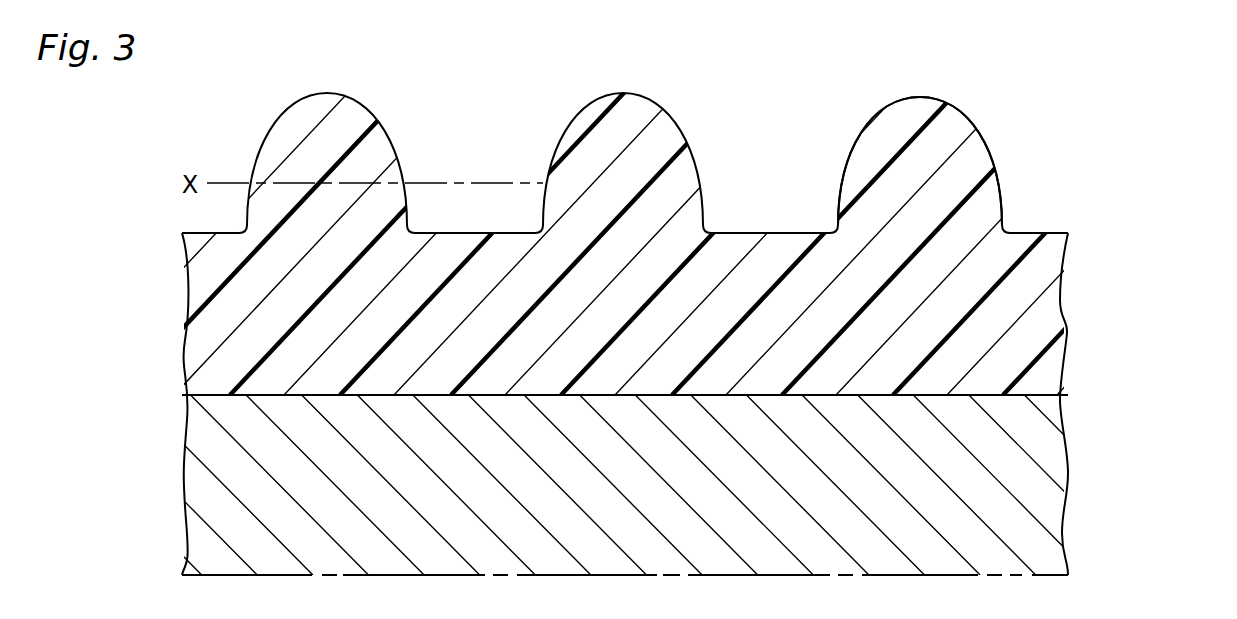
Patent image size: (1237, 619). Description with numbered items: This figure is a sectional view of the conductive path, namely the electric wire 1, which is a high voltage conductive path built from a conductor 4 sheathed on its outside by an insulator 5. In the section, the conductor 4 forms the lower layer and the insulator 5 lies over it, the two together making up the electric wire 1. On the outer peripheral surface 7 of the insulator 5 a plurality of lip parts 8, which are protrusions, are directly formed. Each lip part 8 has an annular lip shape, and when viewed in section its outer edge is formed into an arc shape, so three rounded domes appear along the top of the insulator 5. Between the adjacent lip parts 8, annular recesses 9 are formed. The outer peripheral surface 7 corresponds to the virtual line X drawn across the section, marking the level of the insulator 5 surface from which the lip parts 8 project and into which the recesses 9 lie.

The electric wire 1 is at (1147, 330).
The conductor 4 is at (967, 465).
The insulator 5 is at (967, 352).
The outer peripheral surface 7 is at (475, 233).
The lip part 8 is at (919, 97).
The annular recess 9 is at (760, 234).